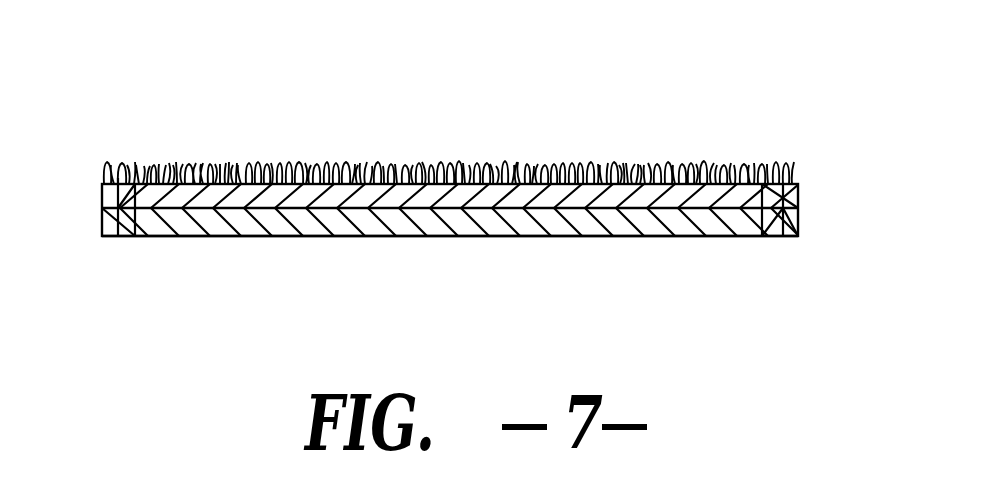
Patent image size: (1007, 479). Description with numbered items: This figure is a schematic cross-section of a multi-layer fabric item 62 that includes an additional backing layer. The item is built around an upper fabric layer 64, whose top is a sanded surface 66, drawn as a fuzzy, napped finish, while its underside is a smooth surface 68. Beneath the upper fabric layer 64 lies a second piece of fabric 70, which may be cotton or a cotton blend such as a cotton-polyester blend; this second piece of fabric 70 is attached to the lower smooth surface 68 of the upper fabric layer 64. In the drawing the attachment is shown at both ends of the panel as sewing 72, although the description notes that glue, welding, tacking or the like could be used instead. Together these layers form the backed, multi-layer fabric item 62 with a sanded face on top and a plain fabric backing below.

The multi-layer fabric item 62 is at (732, 115).
The upper fabric layer 64 is at (553, 196).
The sanded surface 66 is at (328, 182).
The smooth surface 68 is at (299, 215).
The second piece of fabric 70 is at (612, 225).
The sewing 72 is at (103, 202).